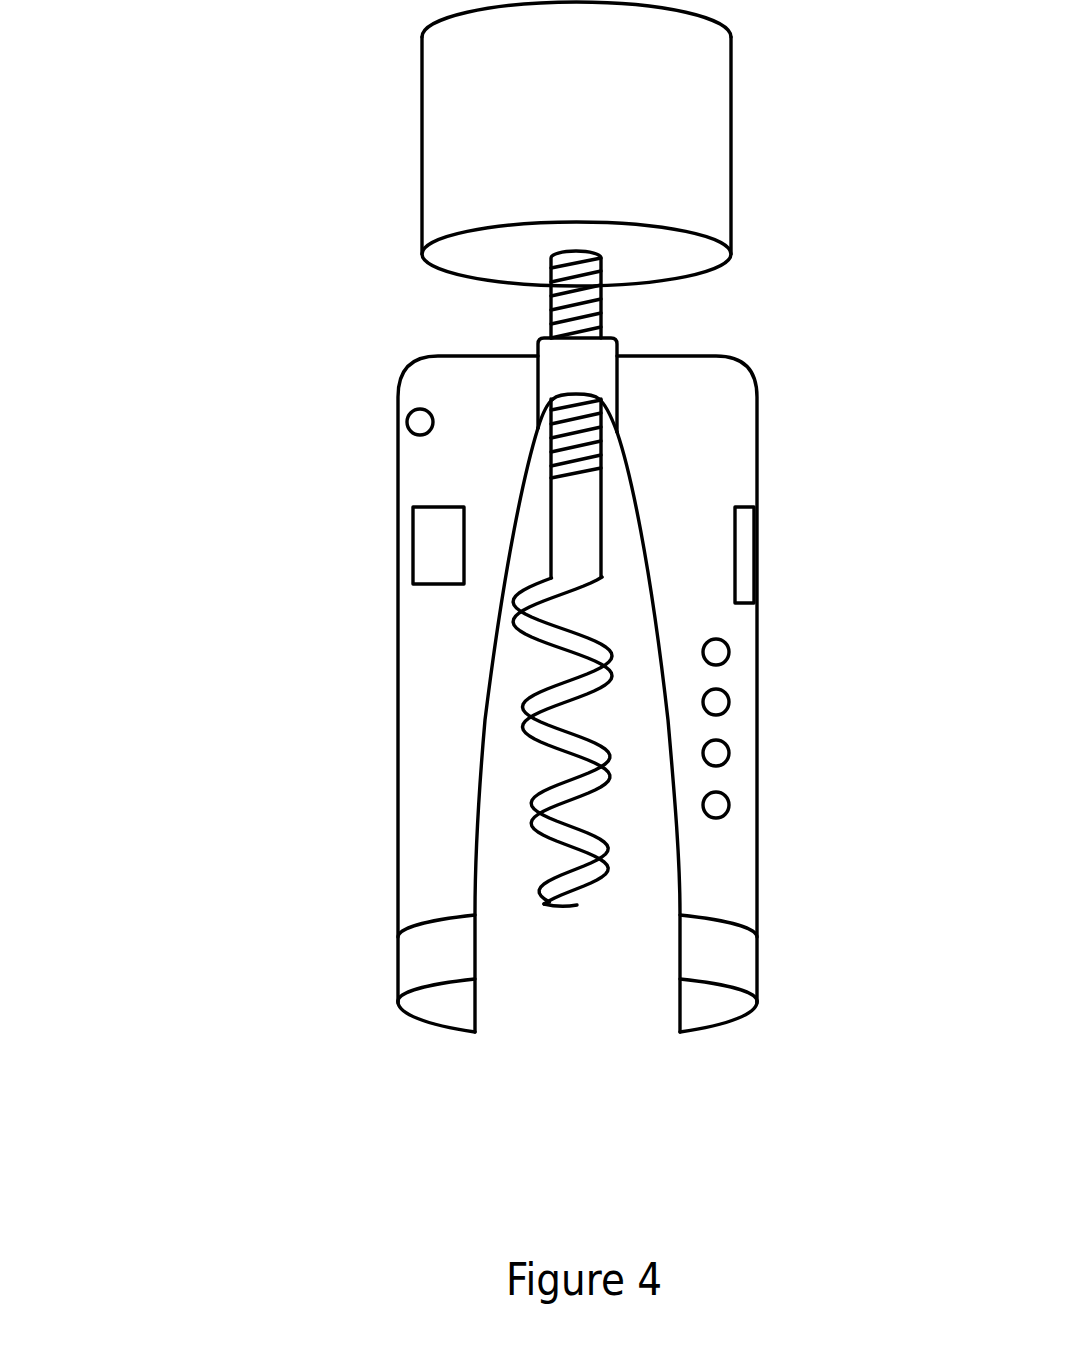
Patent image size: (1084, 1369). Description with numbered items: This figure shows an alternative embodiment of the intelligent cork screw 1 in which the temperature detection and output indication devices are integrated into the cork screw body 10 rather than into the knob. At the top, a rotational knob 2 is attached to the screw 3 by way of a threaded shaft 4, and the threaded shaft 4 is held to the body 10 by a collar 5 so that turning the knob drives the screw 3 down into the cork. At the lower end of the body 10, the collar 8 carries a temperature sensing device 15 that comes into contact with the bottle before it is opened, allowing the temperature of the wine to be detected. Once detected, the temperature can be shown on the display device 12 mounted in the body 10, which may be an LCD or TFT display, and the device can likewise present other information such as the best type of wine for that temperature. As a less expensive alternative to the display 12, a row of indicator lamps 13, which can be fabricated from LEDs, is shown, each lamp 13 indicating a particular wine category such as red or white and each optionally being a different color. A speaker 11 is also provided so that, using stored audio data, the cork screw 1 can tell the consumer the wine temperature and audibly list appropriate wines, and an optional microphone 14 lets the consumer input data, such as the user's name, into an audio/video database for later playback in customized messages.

The intelligent cork screw 1 is at (242, 168).
The rotational knob 2 is at (692, 129).
The screw 3 is at (537, 738).
The threaded shaft 4 is at (600, 299).
The collar 5 is at (555, 376).
The collar 8 is at (407, 983).
The cork screw body 10 is at (727, 462).
The speaker 11 is at (745, 570).
The display device 12 is at (437, 563).
The indicator lamp 13 is at (729, 805).
The microphone 14 is at (403, 422).
The temperature sensing device 15 is at (717, 998).